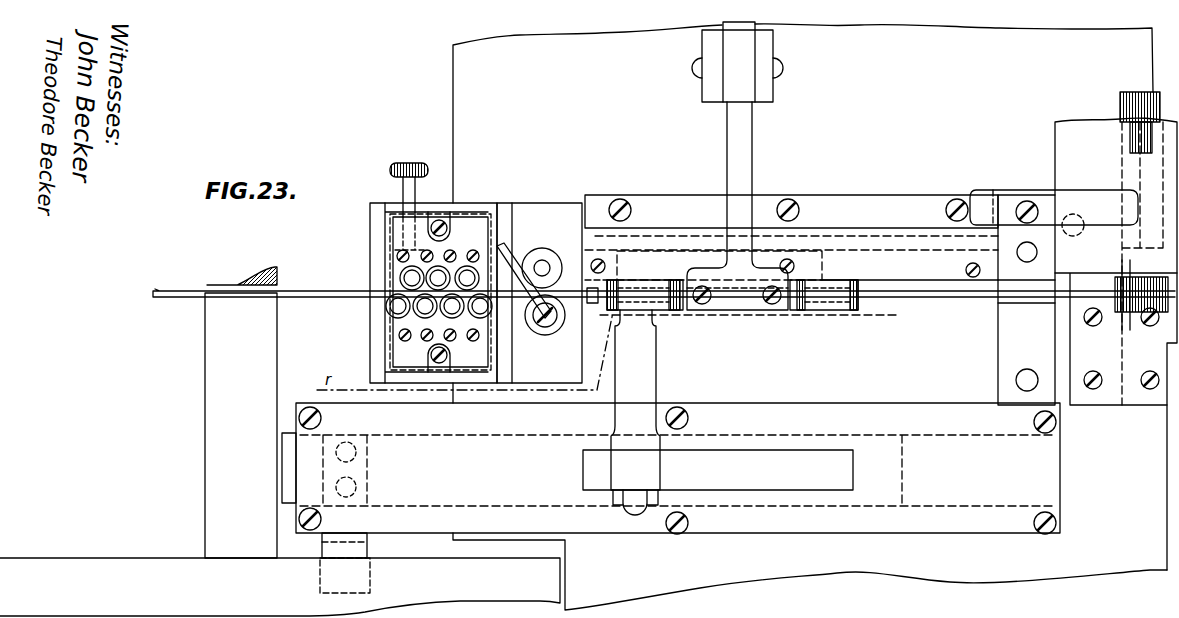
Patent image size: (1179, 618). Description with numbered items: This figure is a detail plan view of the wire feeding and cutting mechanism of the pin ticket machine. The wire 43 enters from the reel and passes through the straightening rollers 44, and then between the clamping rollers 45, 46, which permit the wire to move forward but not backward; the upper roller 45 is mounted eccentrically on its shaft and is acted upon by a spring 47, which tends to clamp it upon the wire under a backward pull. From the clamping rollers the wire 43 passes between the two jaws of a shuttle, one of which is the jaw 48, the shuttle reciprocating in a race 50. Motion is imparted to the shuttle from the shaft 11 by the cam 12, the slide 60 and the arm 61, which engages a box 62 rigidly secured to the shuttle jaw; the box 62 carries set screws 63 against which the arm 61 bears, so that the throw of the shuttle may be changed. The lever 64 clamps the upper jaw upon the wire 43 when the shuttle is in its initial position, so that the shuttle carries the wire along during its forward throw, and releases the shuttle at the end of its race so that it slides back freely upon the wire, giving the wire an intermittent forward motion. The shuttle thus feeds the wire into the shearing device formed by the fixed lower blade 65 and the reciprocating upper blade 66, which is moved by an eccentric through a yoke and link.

The shaft 11 is at (241, 412).
The cam 12 is at (280, 574).
The wire 43 is at (1063, 308).
The straightening rollers 44 is at (433, 273).
The upper clamping roller 45 is at (550, 256).
The lower clamping roller 46 is at (551, 333).
The spring 47 is at (528, 280).
The jaw 48 is at (818, 269).
The race 50 is at (791, 237).
The slide 60 is at (288, 465).
The arm 61 is at (635, 412).
The box 62 is at (602, 285).
The set screws 63 is at (591, 305).
The lever 64 is at (738, 150).
The lower shear blade 65 is at (1126, 324).
The upper shear blade 66 is at (1140, 100).